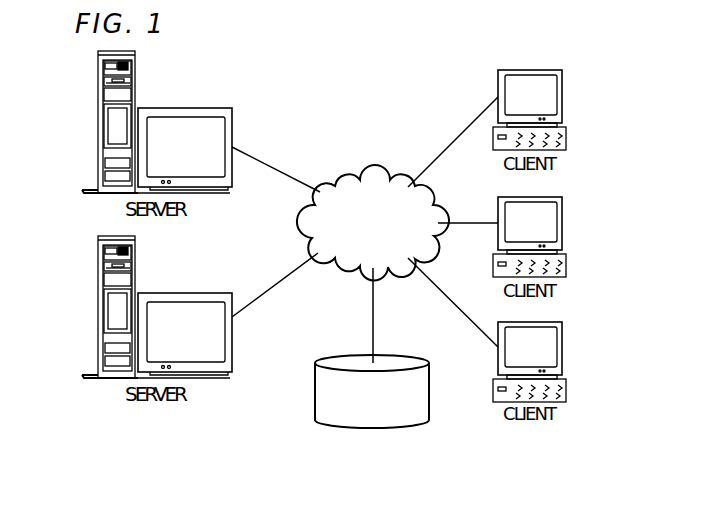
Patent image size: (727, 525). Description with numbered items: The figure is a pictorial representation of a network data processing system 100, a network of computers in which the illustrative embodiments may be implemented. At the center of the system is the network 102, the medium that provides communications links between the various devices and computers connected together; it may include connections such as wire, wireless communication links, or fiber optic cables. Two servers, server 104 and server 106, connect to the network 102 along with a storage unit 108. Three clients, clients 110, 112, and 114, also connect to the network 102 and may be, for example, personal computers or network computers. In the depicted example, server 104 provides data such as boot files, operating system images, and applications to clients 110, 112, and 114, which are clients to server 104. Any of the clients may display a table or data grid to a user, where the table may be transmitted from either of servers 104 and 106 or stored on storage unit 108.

The network data processing system 100 is at (419, 78).
The network 102 is at (345, 177).
The server 104 is at (98, 123).
The server 106 is at (98, 308).
The storage unit 108 is at (357, 428).
The client 110 is at (563, 96).
The client 112 is at (563, 223).
The client 114 is at (563, 347).